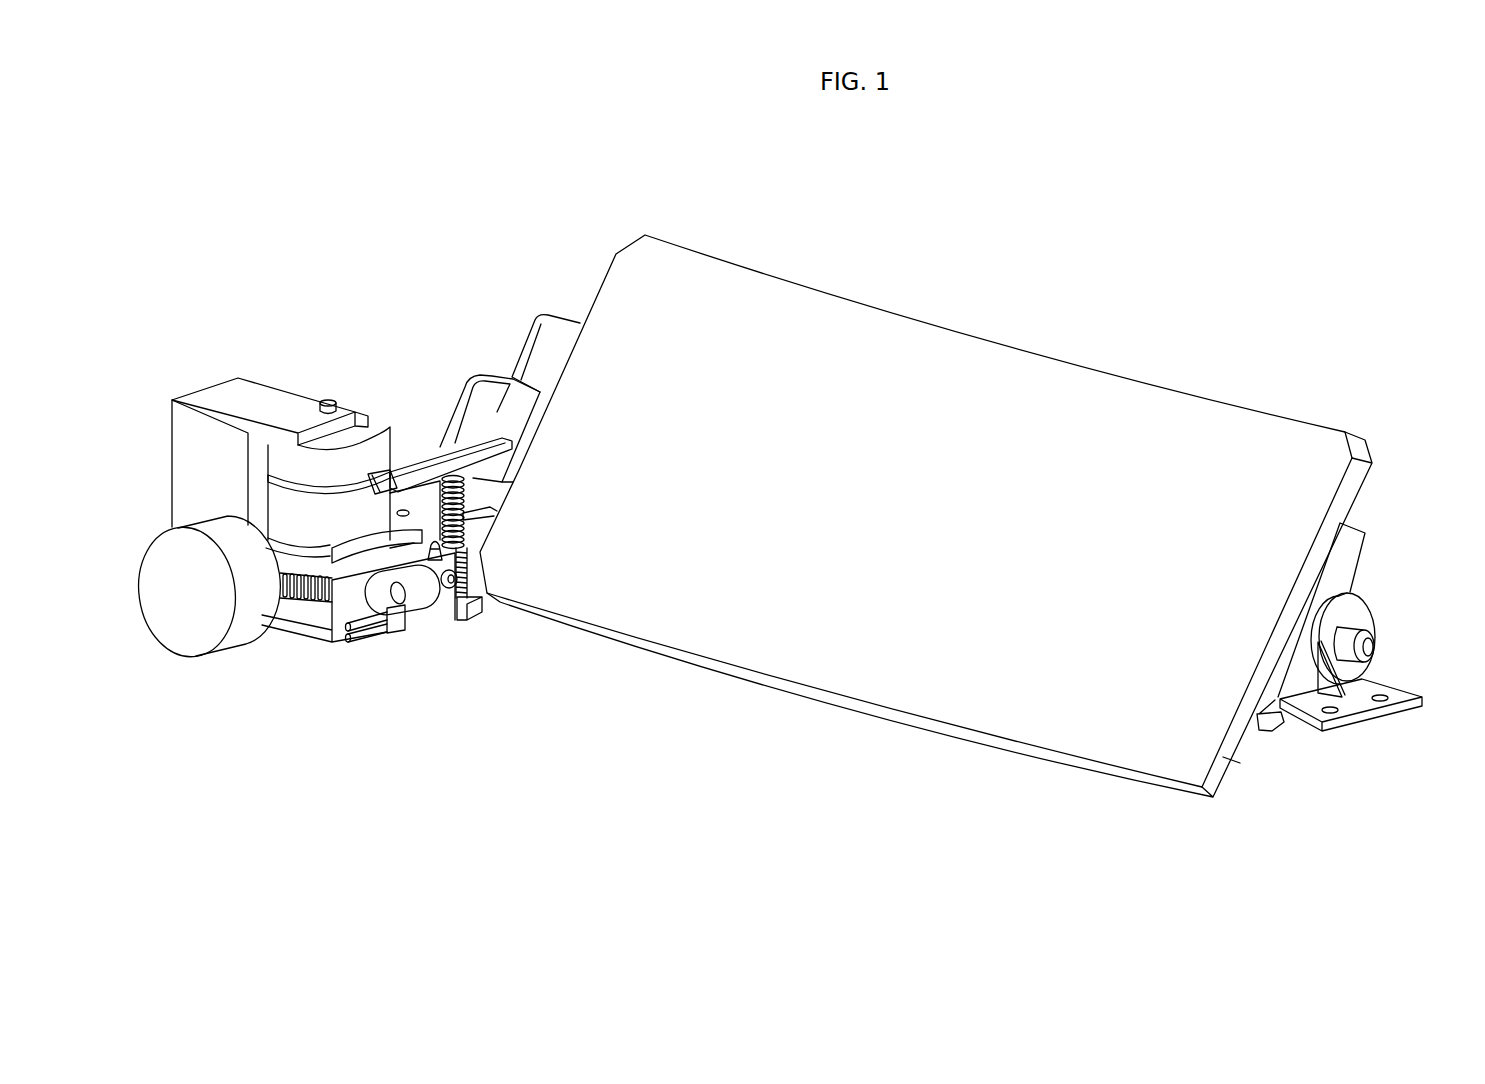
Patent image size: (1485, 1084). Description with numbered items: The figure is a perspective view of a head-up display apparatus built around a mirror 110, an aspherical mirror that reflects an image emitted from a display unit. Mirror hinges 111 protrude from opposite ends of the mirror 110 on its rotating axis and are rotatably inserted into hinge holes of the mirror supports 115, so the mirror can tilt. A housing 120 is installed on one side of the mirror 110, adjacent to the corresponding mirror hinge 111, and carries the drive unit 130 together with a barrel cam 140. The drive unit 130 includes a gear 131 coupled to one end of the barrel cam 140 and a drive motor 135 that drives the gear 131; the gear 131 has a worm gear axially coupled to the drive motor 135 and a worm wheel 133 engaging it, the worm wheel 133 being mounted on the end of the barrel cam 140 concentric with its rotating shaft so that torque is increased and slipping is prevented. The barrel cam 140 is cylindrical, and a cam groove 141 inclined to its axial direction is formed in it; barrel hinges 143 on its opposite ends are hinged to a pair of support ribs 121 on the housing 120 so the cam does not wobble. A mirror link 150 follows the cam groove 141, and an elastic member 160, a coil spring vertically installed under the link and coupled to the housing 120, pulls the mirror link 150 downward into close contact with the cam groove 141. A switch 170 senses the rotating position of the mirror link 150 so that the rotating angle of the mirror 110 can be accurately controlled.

The mirror 110 is at (975, 333).
The mirror hinge 111 is at (1375, 648).
The mirror support 115 is at (1360, 720).
The housing 120 is at (202, 387).
The support rib 121 is at (259, 385).
The drive unit 130 is at (200, 720).
The gear 131 is at (316, 600).
The worm wheel 133 is at (330, 630).
The drive motor 135 is at (208, 645).
The barrel cam 140 is at (293, 512).
The cam groove 141 is at (355, 560).
The barrel hinge 143 is at (329, 400).
The mirror link 150 is at (421, 462).
The elastic member 160 is at (478, 552).
The switch 170 is at (436, 560).